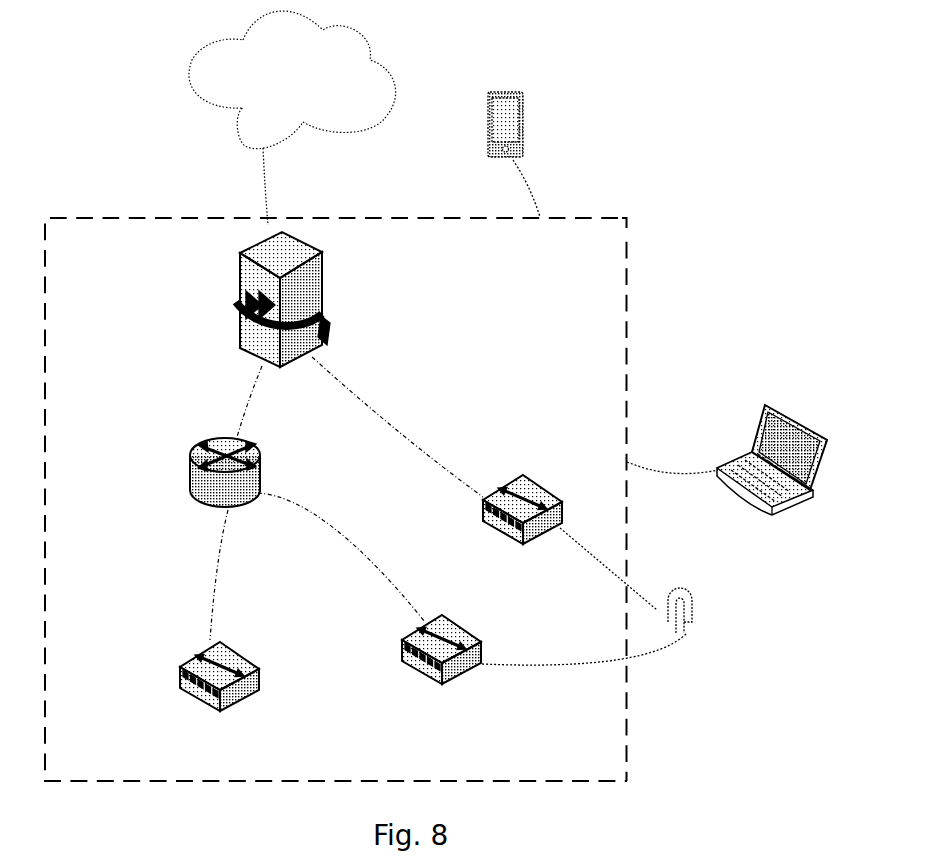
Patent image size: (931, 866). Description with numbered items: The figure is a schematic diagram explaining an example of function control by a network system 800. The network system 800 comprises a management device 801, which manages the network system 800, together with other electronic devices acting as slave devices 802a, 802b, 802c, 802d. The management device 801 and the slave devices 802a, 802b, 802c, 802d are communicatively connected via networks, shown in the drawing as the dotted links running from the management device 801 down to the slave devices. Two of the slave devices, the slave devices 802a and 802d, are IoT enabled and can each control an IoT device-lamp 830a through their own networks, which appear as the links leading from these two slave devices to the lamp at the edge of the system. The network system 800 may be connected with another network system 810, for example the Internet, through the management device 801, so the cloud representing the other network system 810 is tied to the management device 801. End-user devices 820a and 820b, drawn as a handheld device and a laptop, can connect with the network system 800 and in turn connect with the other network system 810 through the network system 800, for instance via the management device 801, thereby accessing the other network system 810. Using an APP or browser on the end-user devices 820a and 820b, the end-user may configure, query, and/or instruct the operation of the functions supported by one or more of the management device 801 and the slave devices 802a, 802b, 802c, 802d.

The network system 800 is at (628, 367).
The management device 801 is at (340, 364).
The slave device 802a is at (522, 493).
The slave device 802b is at (287, 526).
The slave device 802c is at (196, 676).
The slave device 802d is at (418, 661).
The another network system 810 is at (292, 118).
The end-user device 820a is at (537, 154).
The end-user device 820b is at (727, 465).
The IoT device-lamp 830a is at (621, 596).